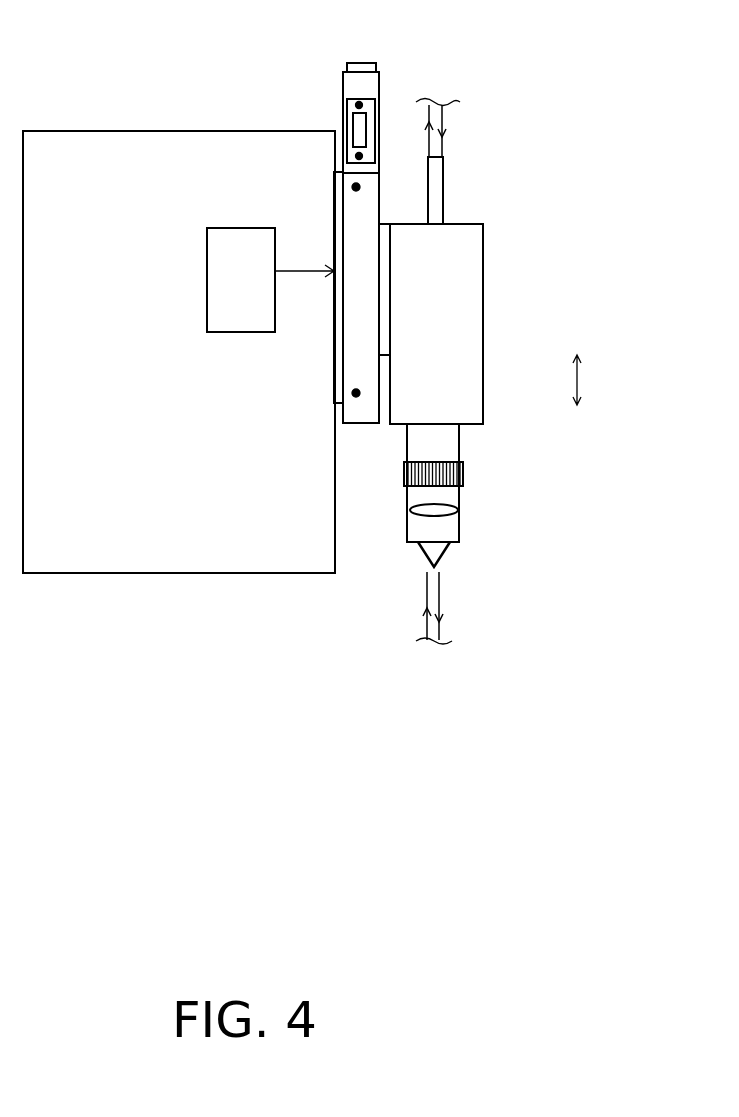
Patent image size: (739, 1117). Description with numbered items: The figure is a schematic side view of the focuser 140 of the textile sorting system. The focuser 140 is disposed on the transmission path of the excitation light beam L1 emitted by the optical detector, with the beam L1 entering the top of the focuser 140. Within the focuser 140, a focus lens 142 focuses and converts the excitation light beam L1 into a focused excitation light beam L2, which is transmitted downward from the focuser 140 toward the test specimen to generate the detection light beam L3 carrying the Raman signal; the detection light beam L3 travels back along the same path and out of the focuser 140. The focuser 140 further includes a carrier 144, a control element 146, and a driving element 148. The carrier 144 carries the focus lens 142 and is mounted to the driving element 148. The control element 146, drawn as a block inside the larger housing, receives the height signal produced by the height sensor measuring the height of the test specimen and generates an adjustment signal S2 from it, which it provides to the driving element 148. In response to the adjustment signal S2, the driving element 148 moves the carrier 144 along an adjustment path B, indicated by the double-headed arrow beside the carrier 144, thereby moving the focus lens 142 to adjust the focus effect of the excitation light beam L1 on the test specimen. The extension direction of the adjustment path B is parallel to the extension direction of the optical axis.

The focuser 140 is at (334, 367).
The focus lens 142 is at (458, 517).
The carrier 144 is at (472, 309).
The control element 146 is at (222, 227).
The driving element 148 is at (351, 224).
The excitation light beam L1 is at (443, 110).
The focused excitation light beam L2 is at (440, 585).
The detection light beam L3 is at (427, 110).
The adjustment signal S2 is at (304, 289).
The adjustment path B is at (589, 380).